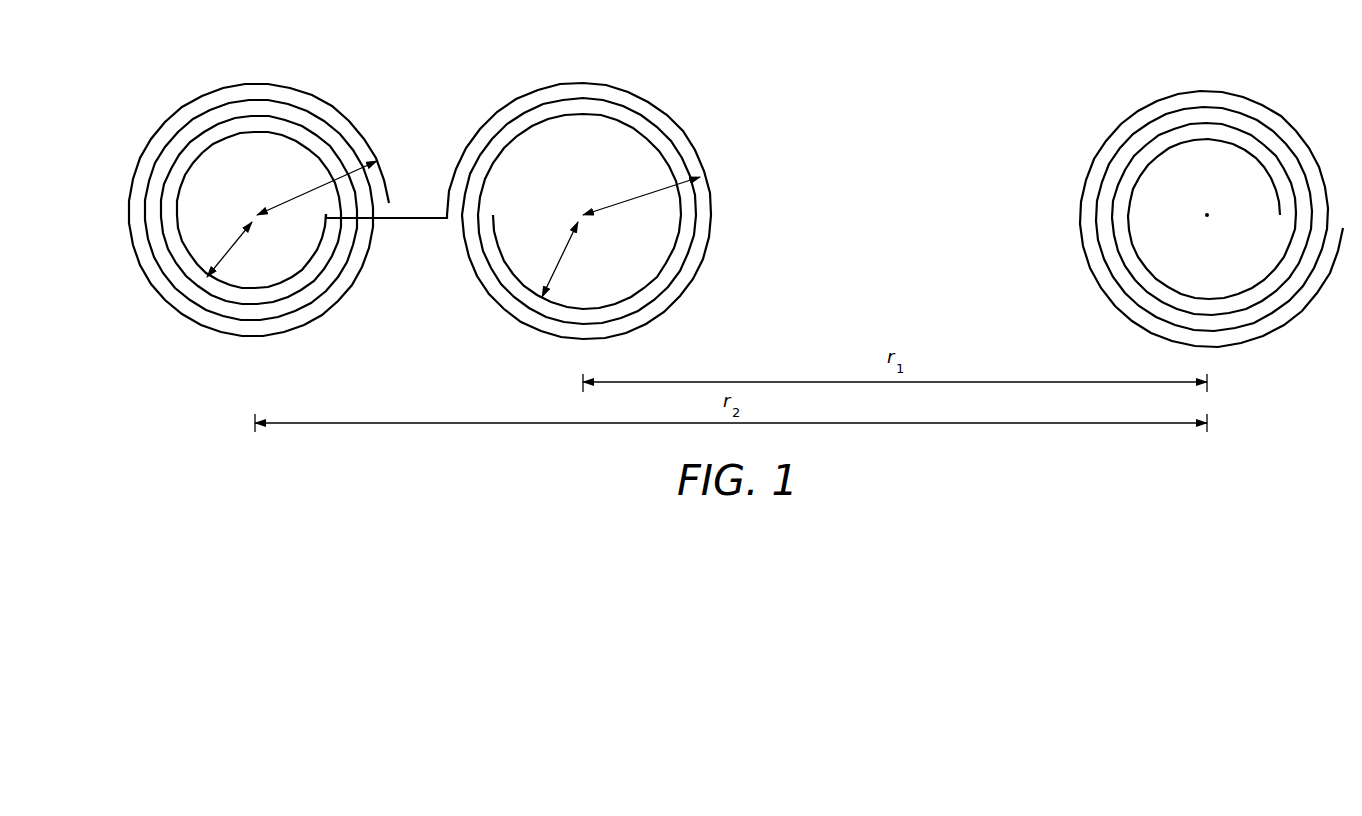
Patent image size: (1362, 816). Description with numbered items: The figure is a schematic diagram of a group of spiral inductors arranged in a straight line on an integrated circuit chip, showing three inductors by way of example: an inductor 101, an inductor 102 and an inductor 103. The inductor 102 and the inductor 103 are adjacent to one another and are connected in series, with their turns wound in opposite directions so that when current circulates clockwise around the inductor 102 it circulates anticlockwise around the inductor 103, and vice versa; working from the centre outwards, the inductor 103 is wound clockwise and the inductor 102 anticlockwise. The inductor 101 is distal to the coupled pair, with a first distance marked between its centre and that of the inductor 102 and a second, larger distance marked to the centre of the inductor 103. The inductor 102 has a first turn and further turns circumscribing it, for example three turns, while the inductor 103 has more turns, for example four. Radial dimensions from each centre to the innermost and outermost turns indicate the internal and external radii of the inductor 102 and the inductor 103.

The inductor 101 is at (1266, 102).
The inductor 102 is at (630, 92).
The inductor 103 is at (312, 92).